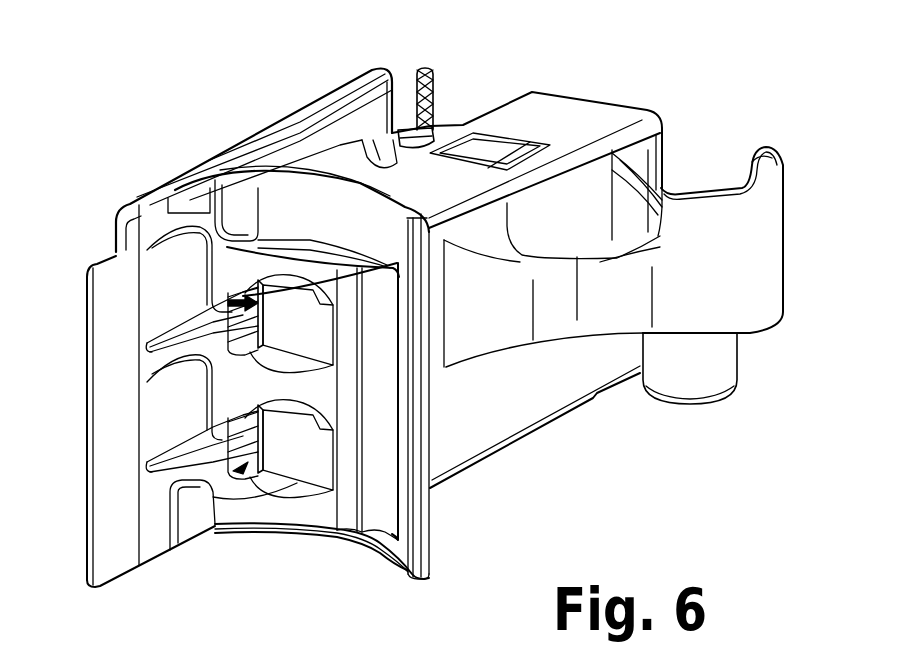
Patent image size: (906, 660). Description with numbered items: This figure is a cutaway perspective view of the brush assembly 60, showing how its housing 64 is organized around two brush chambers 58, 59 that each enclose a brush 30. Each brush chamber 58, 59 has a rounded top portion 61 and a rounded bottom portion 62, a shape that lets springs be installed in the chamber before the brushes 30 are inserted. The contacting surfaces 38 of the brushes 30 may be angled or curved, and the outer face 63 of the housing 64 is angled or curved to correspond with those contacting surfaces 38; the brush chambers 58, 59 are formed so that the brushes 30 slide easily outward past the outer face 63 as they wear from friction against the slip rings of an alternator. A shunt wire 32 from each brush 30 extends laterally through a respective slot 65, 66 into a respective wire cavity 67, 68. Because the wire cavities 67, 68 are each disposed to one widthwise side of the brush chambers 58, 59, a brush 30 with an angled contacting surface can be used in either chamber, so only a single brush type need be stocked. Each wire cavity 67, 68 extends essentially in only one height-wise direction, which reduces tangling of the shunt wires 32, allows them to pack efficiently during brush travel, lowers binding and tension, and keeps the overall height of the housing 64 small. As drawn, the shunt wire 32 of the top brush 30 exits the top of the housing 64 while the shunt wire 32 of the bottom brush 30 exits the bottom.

The brush assembly 60 is at (95, 151).
The outer face 63 is at (240, 273).
The shunt wire 32 is at (433, 80).
The housing 64 is at (587, 118).
The wire cavity 67 is at (189, 240).
The wire cavity 68 is at (189, 367).
The brush chamber 58 is at (232, 303).
The slot 65 is at (187, 330).
The slot 66 is at (183, 458).
The rounded top portion 61 is at (262, 430).
The brush chamber 59 is at (212, 497).
The rounded bottom portion 62 is at (288, 498).
The brush 30 is at (297, 347).
The contacting surface 38 is at (300, 317).